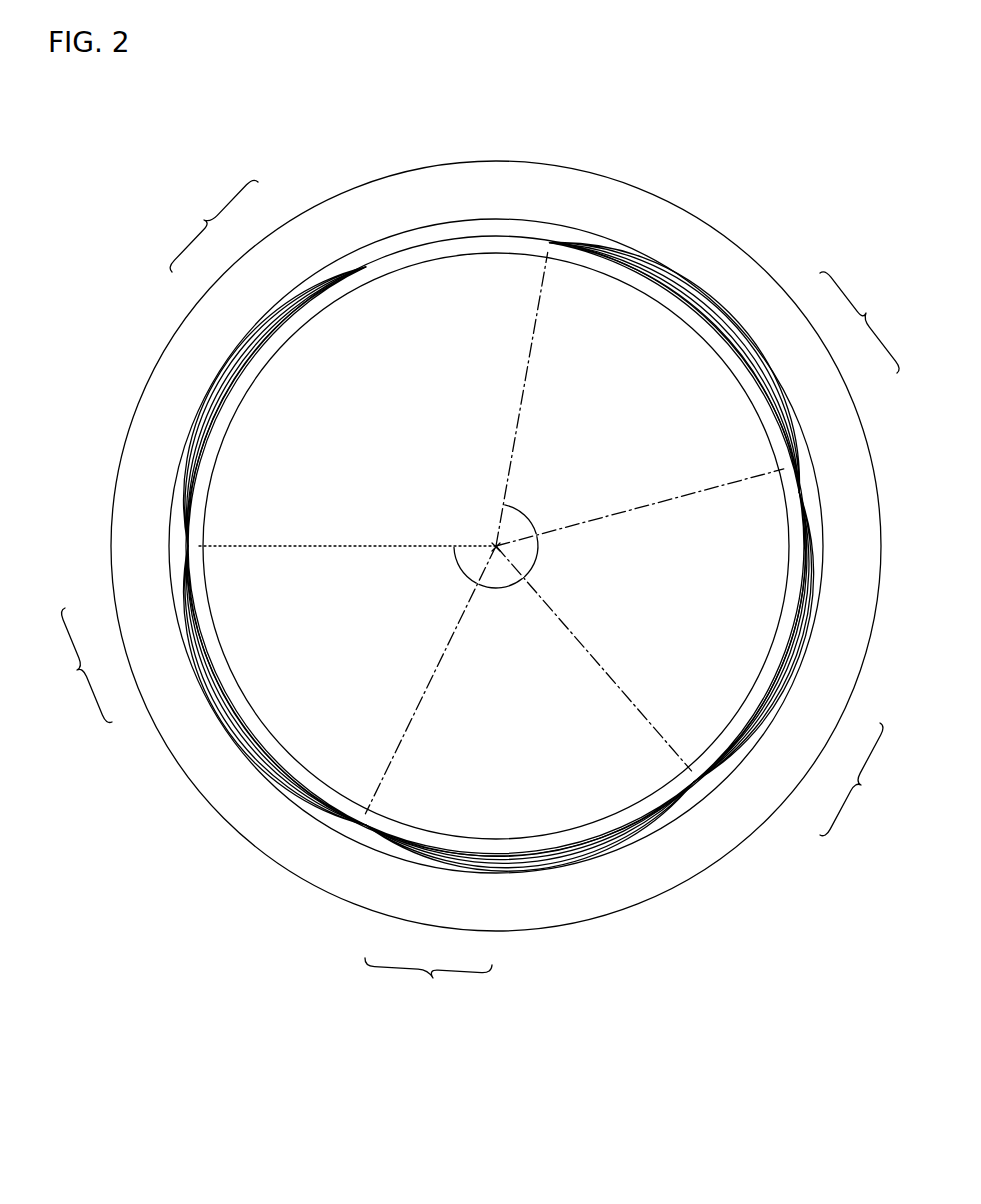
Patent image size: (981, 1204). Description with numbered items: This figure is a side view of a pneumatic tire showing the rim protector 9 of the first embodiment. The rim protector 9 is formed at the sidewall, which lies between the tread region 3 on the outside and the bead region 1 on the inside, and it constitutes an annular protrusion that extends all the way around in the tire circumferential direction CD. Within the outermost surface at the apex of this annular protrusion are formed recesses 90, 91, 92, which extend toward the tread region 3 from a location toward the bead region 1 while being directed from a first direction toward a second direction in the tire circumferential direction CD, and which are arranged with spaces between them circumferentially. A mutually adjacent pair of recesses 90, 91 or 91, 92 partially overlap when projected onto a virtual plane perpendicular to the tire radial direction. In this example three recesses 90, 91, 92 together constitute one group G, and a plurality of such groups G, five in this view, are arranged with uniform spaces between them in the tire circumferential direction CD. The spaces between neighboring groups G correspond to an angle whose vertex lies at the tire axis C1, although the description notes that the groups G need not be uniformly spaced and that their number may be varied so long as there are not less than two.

The bead region 1 is at (247, 608).
The tread region 3 is at (597, 960).
The rim protector 9 is at (477, 228).
The first recess 90 is at (237, 350).
The second recess 91 is at (287, 288).
The third recess 92 is at (337, 260).
The group G is at (478, 594).
The tire axis C1 is at (494, 545).
The tire circumferential direction CD is at (590, 128).